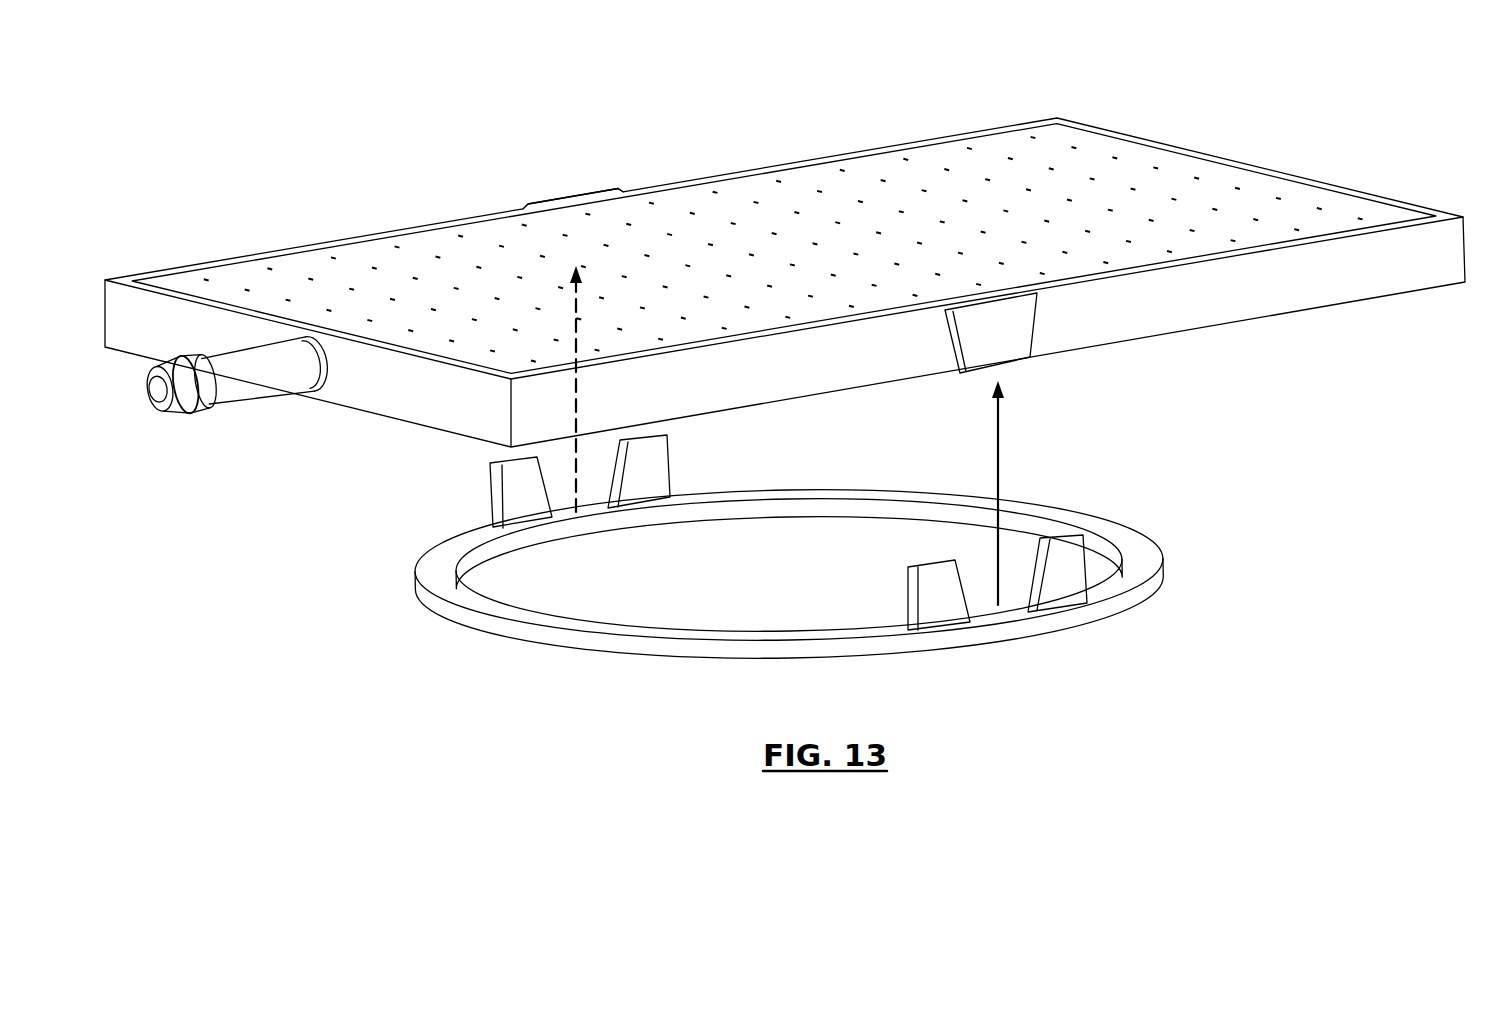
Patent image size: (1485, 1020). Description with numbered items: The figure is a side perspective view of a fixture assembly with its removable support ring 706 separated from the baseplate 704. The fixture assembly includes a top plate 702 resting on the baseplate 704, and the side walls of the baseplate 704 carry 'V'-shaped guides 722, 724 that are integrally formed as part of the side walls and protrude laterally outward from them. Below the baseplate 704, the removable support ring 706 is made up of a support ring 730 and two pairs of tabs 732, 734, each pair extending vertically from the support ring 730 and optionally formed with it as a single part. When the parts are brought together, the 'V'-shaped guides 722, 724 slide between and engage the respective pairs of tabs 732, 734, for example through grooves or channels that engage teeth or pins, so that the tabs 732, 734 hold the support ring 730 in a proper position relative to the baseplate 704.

The top plate 702 is at (1337, 207).
The baseplate 704 is at (1310, 297).
The removable support ring 706 is at (822, 564).
The 'V'-shaped guide 722 is at (1020, 347).
The 'V'-shaped guide 724 is at (577, 192).
The support ring 730 is at (1142, 545).
The pair of tabs 732 is at (942, 612).
The pair of tabs 734 is at (492, 503).